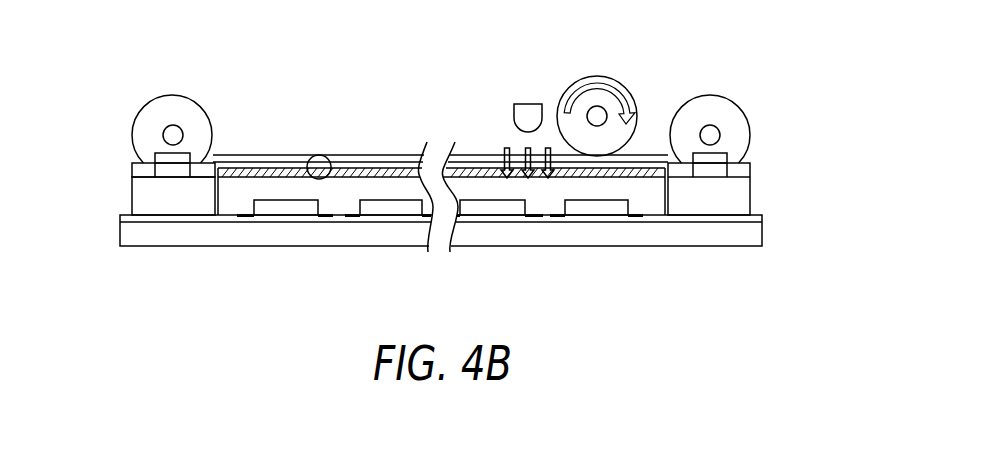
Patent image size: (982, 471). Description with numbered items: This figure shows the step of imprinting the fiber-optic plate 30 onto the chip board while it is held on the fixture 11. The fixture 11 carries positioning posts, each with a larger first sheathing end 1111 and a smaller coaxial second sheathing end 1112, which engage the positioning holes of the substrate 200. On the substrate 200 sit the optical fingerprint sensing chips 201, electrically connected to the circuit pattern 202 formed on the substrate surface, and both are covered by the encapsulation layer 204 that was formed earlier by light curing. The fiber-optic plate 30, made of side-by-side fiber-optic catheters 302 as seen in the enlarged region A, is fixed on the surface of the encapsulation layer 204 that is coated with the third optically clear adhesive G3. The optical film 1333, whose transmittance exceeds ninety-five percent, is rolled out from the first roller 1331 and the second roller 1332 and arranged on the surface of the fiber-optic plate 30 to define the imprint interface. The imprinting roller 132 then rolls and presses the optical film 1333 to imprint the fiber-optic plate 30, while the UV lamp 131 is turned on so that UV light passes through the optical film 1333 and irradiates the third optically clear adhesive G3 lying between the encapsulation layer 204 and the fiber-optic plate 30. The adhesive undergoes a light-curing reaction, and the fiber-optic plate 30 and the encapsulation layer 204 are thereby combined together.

The second roller 1332 is at (167, 115).
The second sheathing end 1112 is at (157, 157).
The fiber-optic catheter 302 is at (131, 167).
The first sheathing end 1111 is at (150, 197).
The region A is at (319, 155).
The third optically clear adhesive G3 is at (467, 158).
The optical film 1333 is at (487, 163).
The UV lamp 131 is at (527, 113).
The imprinting roller 132 is at (597, 80).
The fiber-optic plate 30 is at (651, 167).
The first roller 1331 is at (710, 110).
The encapsulation layer 204 is at (340, 210).
The optical fingerprint sensing chip 201 is at (585, 210).
The circuit pattern 202 is at (636, 218).
The substrate 200 is at (757, 217).
The fixture 11 is at (722, 232).